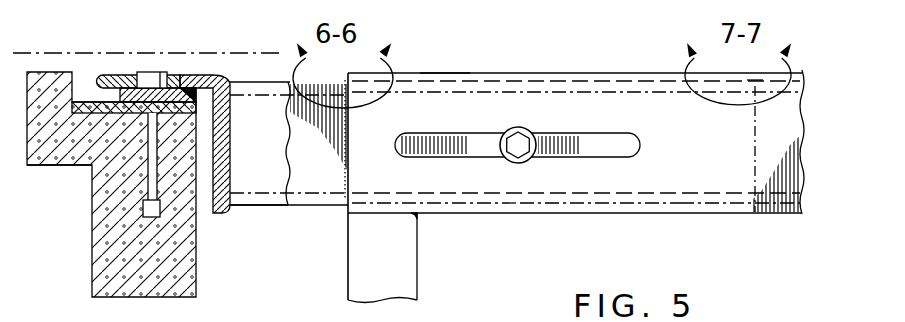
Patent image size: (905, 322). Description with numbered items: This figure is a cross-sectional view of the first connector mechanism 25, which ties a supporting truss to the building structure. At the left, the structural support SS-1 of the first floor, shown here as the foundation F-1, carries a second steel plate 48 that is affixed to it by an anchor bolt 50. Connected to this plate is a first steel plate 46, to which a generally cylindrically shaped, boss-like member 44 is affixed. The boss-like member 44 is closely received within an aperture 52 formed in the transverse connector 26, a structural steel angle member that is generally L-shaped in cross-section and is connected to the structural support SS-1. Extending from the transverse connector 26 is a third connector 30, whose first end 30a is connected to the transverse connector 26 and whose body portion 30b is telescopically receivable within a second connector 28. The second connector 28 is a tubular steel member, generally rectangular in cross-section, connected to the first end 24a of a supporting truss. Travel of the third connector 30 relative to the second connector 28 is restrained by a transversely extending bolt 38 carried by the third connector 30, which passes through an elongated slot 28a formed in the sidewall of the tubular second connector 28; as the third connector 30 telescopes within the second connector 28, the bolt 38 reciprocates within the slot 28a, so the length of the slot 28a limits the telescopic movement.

The foundation F-1 is at (50, 72).
The structural support SS-1 is at (69, 160).
The second steel plate 48 is at (127, 106).
The first steel plate 46 is at (160, 97).
The anchor bolt 50 is at (155, 218).
The aperture 52 is at (130, 75).
The boss-like member 44 is at (160, 72).
The transverse connector 26 is at (212, 72).
The third connector 30 is at (307, 185).
The first end 30a is at (253, 170).
The body portion 30b is at (603, 197).
The second connector 28 is at (525, 71).
The first connector mechanism 25 is at (442, 51).
The first end of supporting truss 24a is at (410, 247).
The elongated slot 28a is at (640, 150).
The bolt 38 is at (535, 128).